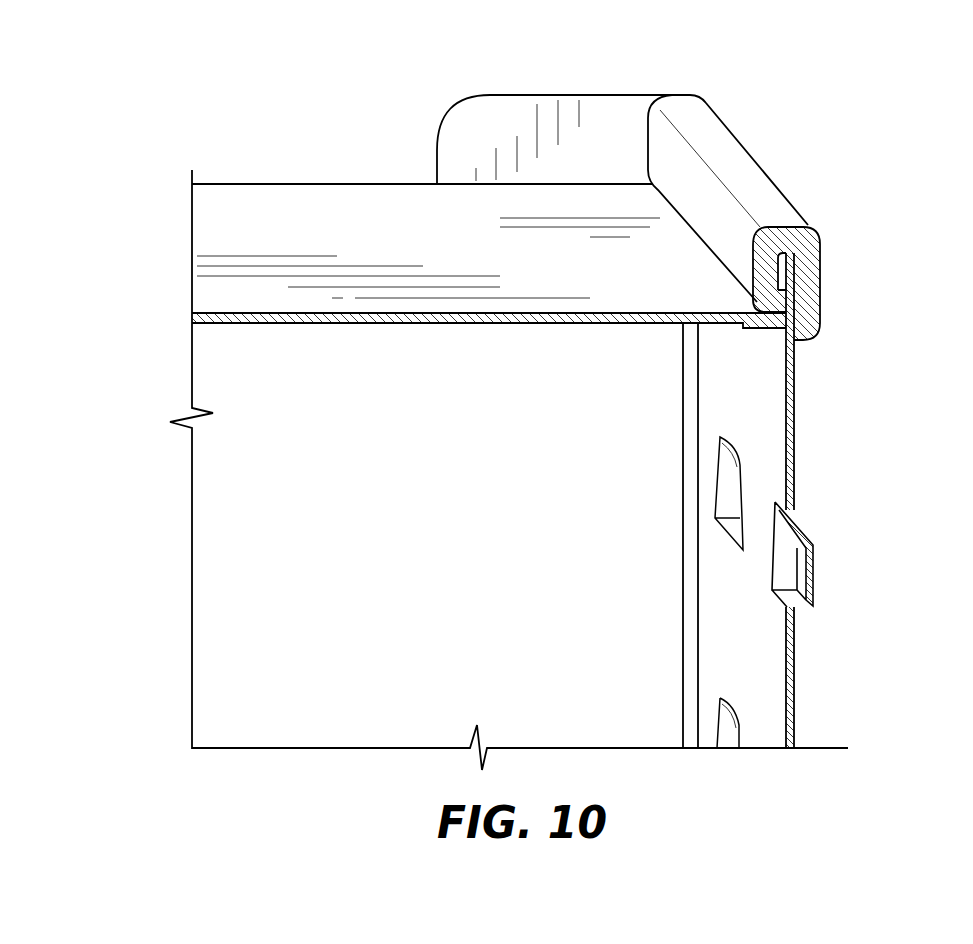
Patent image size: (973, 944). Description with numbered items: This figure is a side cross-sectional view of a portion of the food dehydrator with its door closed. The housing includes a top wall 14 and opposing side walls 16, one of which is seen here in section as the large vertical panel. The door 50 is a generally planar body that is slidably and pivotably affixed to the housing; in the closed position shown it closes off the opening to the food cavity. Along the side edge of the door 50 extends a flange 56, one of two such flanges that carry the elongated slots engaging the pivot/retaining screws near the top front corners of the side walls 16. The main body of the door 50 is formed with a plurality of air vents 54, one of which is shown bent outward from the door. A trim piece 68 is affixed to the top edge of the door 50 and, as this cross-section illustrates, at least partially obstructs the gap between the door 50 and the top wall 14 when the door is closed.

The top wall 14 is at (319, 222).
The side wall 16 is at (213, 607).
The door 50 is at (790, 360).
The air vent 54 is at (798, 527).
The flange 56 is at (508, 113).
The trim piece 68 is at (797, 230).